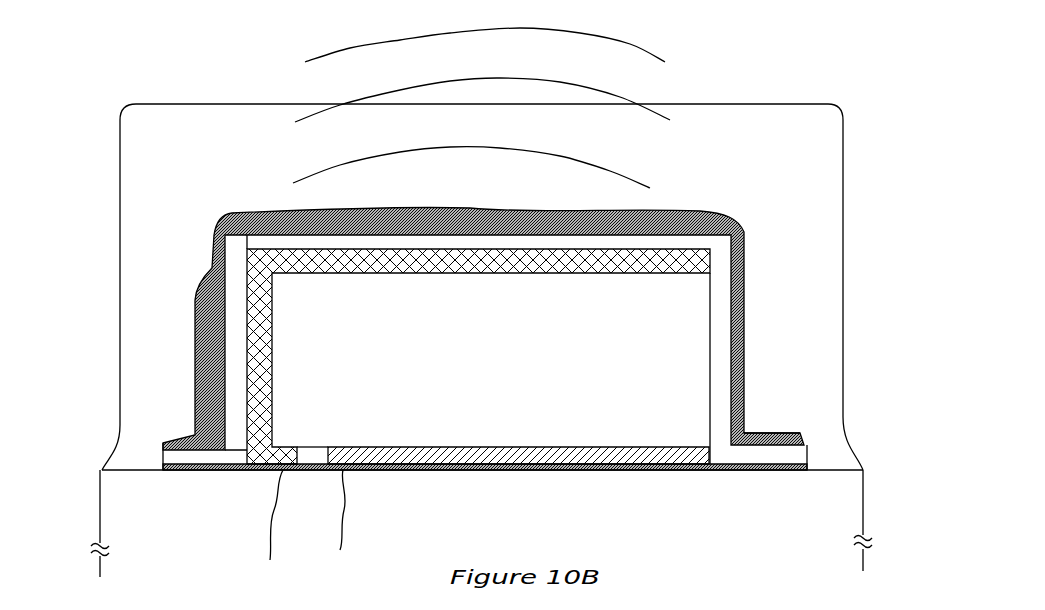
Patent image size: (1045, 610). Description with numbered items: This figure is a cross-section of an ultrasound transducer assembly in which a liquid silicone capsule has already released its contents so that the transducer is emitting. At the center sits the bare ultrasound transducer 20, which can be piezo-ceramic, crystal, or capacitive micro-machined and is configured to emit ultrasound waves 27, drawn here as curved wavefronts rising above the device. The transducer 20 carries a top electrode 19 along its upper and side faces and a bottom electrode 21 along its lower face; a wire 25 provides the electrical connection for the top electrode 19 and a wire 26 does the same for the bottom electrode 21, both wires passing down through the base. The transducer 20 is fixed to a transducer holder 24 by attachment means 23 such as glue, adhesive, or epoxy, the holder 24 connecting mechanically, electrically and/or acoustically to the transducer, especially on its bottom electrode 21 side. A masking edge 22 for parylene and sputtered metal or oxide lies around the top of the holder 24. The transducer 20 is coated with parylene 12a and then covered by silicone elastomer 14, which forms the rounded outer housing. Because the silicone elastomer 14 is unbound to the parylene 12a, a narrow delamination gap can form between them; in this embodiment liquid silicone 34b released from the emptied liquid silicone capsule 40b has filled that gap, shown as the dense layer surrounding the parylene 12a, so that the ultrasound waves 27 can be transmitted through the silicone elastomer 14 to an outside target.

The silicone elastomer 14 is at (795, 160).
The transducer holder 24 is at (810, 520).
The liquid silicone 34b is at (730, 215).
The top electrode 19 is at (700, 250).
The parylene 12a is at (725, 282).
The ultrasound transducer 20 is at (687, 340).
The bottom electrode 21 is at (668, 443).
The masking edge 22 is at (806, 432).
The attachment means 23 is at (696, 474).
The wire 25 is at (258, 548).
The wire 26 is at (351, 521).
The ultrasound waves 27 is at (657, 180).
The emptied liquid silicone capsule 40b is at (162, 356).